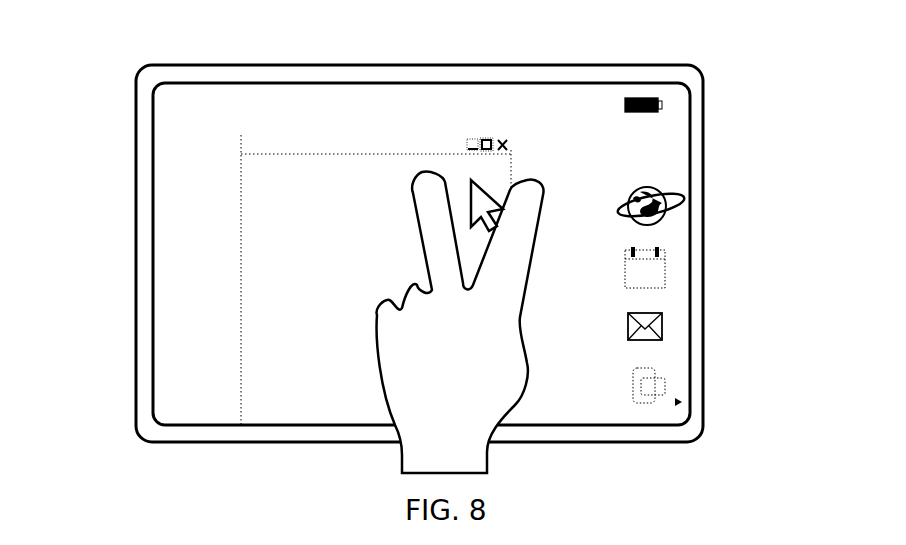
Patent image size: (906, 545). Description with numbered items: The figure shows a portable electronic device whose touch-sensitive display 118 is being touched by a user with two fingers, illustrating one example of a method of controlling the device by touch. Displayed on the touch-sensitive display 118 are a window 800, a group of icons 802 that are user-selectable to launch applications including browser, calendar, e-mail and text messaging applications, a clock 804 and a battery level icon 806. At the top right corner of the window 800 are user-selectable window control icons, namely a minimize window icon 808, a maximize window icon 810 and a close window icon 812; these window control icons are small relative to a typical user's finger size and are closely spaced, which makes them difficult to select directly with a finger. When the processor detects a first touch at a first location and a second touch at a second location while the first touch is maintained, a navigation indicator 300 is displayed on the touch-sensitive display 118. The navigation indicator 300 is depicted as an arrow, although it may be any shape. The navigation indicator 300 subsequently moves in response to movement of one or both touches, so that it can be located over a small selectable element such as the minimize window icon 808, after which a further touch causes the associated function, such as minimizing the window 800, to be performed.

The touch-sensitive display 118 is at (176, 318).
The navigation indicator 300 is at (487, 188).
The window 800 is at (265, 225).
The icons 802 is at (647, 391).
The clock 804 is at (190, 117).
The battery level icon 806 is at (650, 97).
The minimize window icon 808 is at (467, 141).
The maximize window icon 810 is at (487, 138).
The close window icon 812 is at (508, 139).